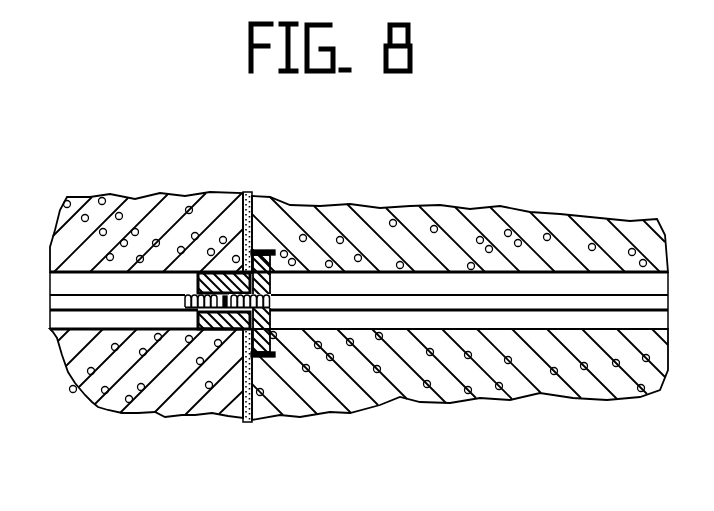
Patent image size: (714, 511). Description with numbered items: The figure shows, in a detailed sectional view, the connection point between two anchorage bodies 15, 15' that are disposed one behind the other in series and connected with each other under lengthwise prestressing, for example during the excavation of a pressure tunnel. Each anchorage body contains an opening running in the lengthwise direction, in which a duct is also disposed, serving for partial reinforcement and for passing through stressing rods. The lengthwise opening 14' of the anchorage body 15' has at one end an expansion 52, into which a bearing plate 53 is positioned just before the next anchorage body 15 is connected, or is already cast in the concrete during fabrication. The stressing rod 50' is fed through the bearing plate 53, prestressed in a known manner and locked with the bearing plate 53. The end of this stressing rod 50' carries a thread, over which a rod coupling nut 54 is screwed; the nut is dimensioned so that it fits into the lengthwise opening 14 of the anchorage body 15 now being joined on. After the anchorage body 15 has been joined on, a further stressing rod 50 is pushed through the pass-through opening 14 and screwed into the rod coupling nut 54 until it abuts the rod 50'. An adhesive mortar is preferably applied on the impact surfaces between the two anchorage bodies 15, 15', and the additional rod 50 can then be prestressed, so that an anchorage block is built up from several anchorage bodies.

The lengthwise opening 14 is at (146, 389).
The lengthwise opening 14' is at (359, 282).
The anchorage body 15 is at (146, 208).
The anchorage body 15' is at (460, 208).
The stressing rod 50 is at (117, 381).
The stressing rod 50' is at (468, 223).
The expansion 52 is at (266, 358).
The bearing plate 53 is at (261, 250).
The rod coupling nut 54 is at (207, 331).